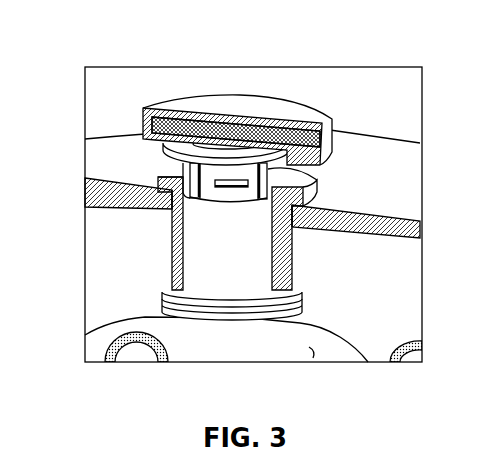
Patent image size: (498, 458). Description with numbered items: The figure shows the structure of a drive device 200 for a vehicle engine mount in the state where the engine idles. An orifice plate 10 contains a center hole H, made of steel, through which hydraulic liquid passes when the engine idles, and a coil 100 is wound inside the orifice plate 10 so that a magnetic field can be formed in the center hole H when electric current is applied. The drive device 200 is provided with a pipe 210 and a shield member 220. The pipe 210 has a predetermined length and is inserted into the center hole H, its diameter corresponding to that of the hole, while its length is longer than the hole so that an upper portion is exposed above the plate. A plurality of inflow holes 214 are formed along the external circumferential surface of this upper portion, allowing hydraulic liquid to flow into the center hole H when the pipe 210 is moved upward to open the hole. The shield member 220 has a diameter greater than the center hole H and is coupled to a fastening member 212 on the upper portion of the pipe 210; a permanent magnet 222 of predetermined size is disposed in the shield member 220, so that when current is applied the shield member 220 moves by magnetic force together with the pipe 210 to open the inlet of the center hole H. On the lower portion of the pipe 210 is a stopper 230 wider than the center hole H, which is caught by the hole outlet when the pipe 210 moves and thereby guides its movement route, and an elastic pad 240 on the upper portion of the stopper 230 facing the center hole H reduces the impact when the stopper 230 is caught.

The orifice plate 10 is at (394, 152).
The coil 100 is at (378, 273).
The drive device 200 is at (211, 208).
The pipe 210 is at (231, 292).
The fastening member 212 is at (232, 193).
The inflow holes 214 is at (173, 172).
The shield member 220 is at (276, 89).
The permanent magnet 222 is at (228, 128).
The stopper 230 is at (163, 316).
The elastic pad 240 is at (162, 292).
The center hole H is at (180, 233).